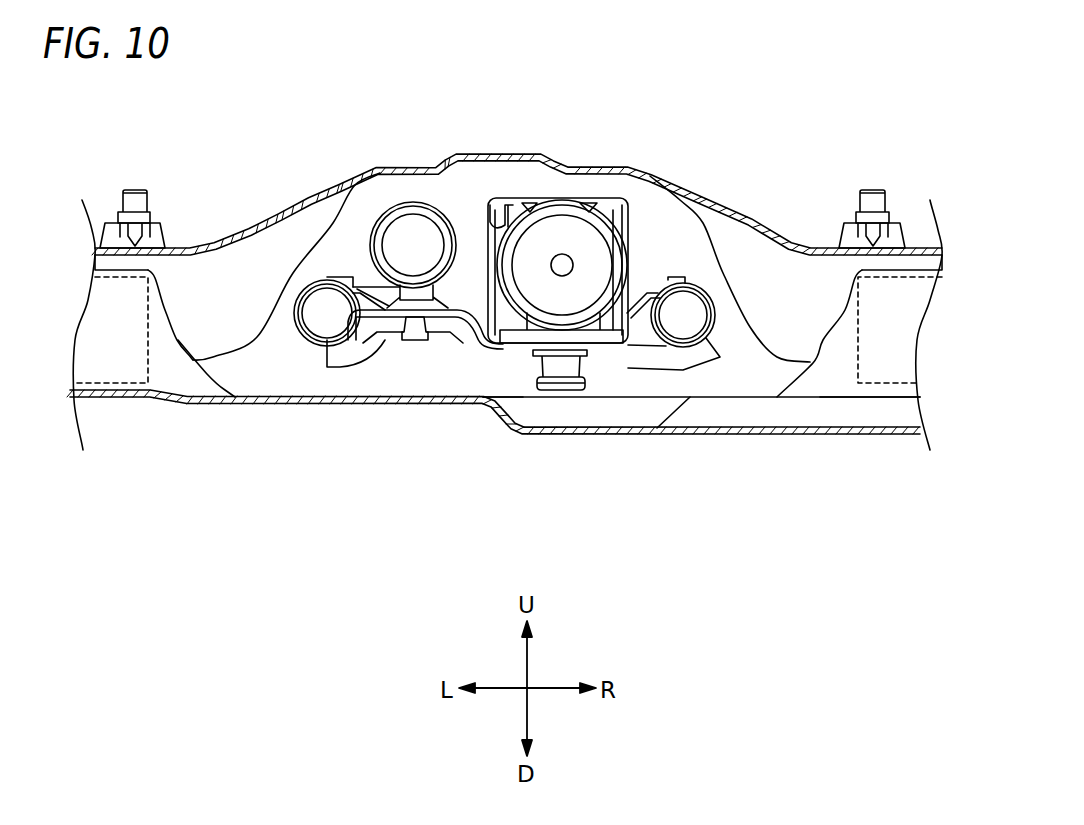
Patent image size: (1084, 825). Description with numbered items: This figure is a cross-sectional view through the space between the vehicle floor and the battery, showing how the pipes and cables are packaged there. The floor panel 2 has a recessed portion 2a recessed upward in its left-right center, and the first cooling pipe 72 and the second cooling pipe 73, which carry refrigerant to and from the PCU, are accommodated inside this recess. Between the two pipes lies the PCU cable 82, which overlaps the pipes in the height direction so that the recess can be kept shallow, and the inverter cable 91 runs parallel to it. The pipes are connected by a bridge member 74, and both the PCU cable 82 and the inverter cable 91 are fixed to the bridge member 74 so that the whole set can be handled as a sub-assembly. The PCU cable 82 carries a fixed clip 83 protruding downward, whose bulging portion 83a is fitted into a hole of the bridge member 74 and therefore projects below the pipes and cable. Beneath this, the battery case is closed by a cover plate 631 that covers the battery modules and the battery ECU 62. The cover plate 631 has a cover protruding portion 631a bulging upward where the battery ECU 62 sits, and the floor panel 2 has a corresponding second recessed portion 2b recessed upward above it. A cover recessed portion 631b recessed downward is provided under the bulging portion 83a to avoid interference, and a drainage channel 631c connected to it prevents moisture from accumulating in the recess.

The floor panel 2 is at (690, 192).
The recessed portion 2a is at (305, 240).
The second recessed portion 2b is at (174, 262).
The battery ECU 62 is at (107, 317).
The cover plate 631 is at (133, 398).
The cover protruding portion 631a is at (113, 270).
The cover recessed portion 631b is at (580, 412).
The drainage channel 631c is at (847, 428).
The first cooling pipe 72 is at (283, 335).
The second cooling pipe 73 is at (720, 328).
The bridge member 74 is at (465, 357).
The PCU cable 82 is at (580, 237).
The fixed clip 83 is at (507, 320).
The bulging portion 83a is at (558, 385).
The inverter cable 91 is at (435, 208).